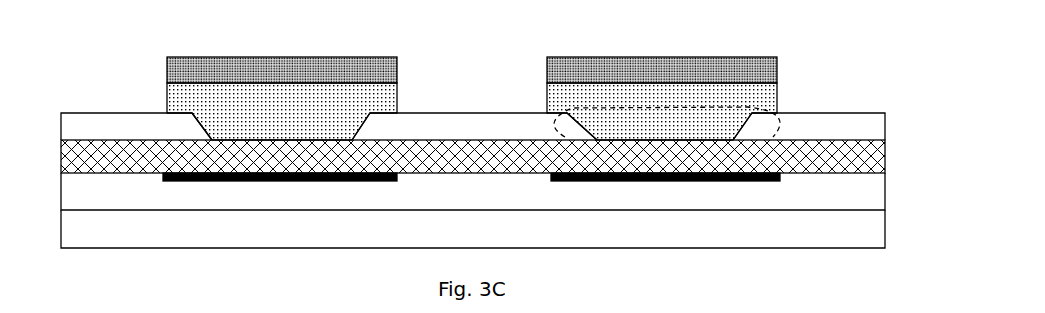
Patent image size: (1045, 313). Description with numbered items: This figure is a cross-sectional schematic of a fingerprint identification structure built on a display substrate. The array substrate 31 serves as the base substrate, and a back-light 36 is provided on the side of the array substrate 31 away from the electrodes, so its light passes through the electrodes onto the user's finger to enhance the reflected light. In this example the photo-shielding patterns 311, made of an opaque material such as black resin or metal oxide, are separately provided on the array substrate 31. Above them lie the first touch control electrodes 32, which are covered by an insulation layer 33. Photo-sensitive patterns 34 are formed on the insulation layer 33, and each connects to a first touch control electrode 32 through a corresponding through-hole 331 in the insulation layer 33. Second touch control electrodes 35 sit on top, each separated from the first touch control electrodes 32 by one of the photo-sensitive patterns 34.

The photo-shielding pattern 311 is at (163, 174).
The array substrate 31 is at (819, 192).
The first touch control electrode 32 is at (819, 157).
The insulation layer 33 is at (819, 129).
The through-hole 331 is at (600, 140).
The photo-sensitive pattern 34 is at (777, 98).
The second touch control electrode 35 is at (777, 69).
The back-light 36 is at (819, 232).